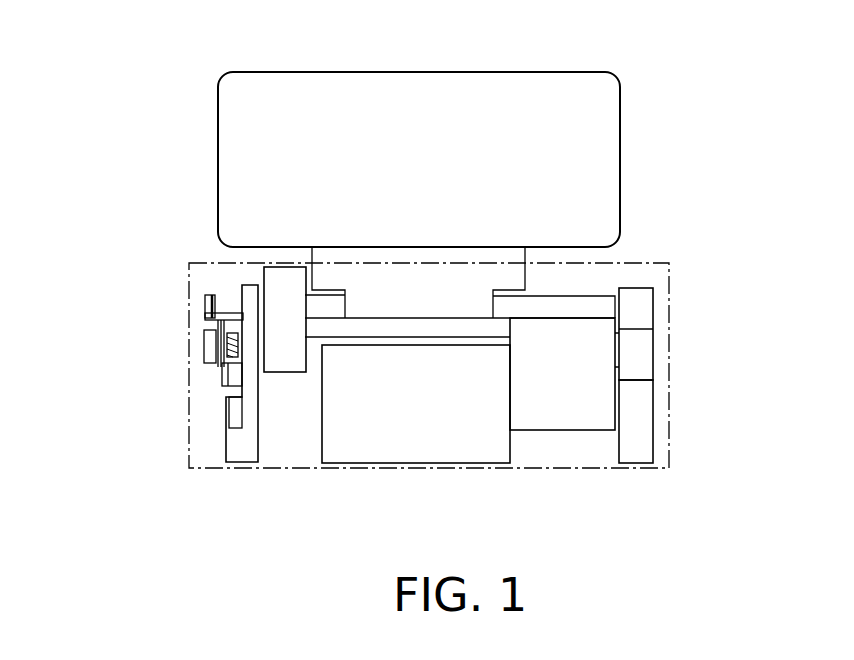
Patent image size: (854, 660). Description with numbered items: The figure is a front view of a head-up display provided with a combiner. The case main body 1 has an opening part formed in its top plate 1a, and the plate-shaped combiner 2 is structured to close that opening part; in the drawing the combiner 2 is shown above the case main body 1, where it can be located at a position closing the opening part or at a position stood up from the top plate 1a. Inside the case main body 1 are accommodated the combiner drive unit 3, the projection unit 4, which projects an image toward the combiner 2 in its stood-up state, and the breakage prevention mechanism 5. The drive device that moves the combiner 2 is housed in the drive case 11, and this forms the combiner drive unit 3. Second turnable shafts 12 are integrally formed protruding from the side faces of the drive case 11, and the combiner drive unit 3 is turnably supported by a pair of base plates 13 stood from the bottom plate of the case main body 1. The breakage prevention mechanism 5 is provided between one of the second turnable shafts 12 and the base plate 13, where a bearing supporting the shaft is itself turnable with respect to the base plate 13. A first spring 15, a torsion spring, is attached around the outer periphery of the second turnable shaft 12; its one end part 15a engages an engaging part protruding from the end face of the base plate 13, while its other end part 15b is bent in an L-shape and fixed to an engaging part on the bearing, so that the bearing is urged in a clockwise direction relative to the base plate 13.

The case main body 1 is at (669, 368).
The top plate 1a is at (630, 262).
The combiner 2 is at (507, 86).
The combiner drive unit 3 is at (567, 410).
The projection unit 4 is at (418, 437).
The breakage prevention mechanism 5 is at (206, 378).
The drive case 11 is at (280, 290).
The second turnable shaft 12 is at (640, 348).
The base plate 13 is at (638, 428).
The first spring 15 is at (207, 355).
The one end part 15a is at (210, 303).
The other end part 15b is at (218, 390).